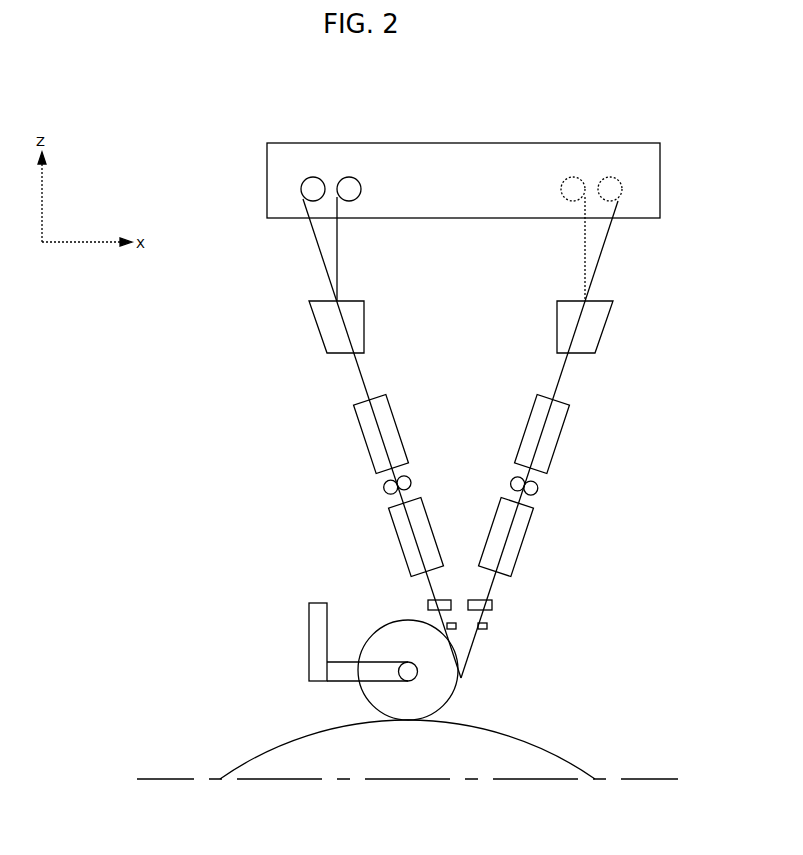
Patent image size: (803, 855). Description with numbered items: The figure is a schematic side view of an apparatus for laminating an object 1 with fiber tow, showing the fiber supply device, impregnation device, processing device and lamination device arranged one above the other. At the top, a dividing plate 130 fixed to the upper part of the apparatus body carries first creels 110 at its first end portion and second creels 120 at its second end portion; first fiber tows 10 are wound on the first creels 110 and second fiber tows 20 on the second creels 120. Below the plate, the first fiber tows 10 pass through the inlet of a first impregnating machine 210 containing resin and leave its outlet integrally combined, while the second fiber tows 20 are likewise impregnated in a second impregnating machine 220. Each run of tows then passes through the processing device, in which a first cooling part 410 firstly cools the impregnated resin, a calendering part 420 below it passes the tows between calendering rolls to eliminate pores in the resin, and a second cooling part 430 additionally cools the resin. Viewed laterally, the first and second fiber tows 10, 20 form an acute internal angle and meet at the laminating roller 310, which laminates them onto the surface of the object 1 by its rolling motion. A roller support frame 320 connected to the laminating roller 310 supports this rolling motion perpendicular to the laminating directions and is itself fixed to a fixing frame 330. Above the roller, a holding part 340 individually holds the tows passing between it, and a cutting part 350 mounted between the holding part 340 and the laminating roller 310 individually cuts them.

The object 1 is at (412, 760).
The first fiber tows 10 is at (320, 257).
The second fiber tows 20 is at (603, 263).
The first creels 110 is at (313, 177).
The second creels 120 is at (608, 183).
The dividing plate 130 is at (437, 152).
The first impregnating machine 210 is at (327, 327).
The second impregnating machine 220 is at (593, 332).
The laminating roller 310 is at (441, 687).
The roller support frame 320 is at (345, 672).
The fixing frame 330 is at (315, 638).
The holding part 340 is at (493, 606).
The cutting part 350 is at (488, 627).
The first cooling part 410 is at (368, 442).
The calendering part 420 is at (383, 490).
The second cooling part 430 is at (407, 547).